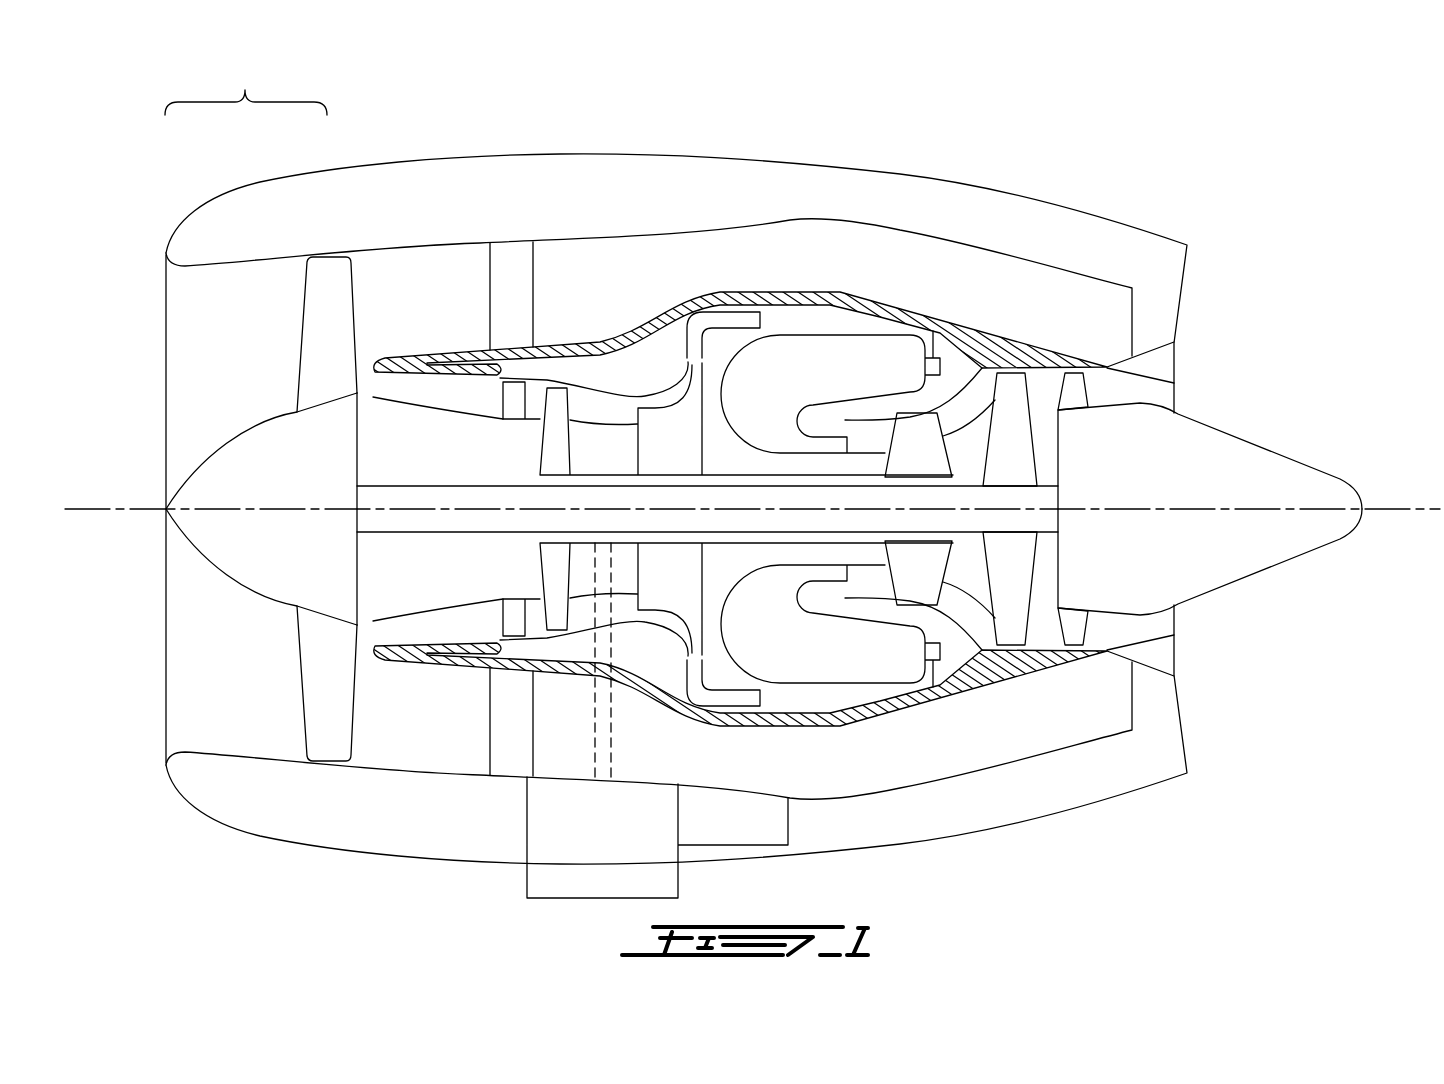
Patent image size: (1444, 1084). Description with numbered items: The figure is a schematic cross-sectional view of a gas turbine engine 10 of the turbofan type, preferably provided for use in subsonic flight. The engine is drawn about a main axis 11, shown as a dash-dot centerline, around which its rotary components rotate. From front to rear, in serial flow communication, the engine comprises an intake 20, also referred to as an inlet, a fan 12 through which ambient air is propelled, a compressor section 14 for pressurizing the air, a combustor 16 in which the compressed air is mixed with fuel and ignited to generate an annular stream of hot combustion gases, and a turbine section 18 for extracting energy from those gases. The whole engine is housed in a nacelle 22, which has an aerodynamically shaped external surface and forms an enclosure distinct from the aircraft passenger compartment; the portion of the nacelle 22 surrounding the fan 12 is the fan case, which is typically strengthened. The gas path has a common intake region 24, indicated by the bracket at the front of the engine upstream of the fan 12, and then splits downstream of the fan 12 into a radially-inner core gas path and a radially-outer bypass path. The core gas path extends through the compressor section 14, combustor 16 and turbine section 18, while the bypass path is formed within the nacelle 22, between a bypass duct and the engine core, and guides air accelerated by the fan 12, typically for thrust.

The gas turbine engine 10 is at (995, 165).
The main axis 11 is at (1410, 505).
The fan 12 is at (320, 684).
The compressor section 14 is at (592, 402).
The combustor 16 is at (823, 360).
The turbine section 18 is at (963, 575).
The intake 20 is at (166, 255).
The nacelle 22 is at (445, 158).
The common intake region 24 is at (235, 102).